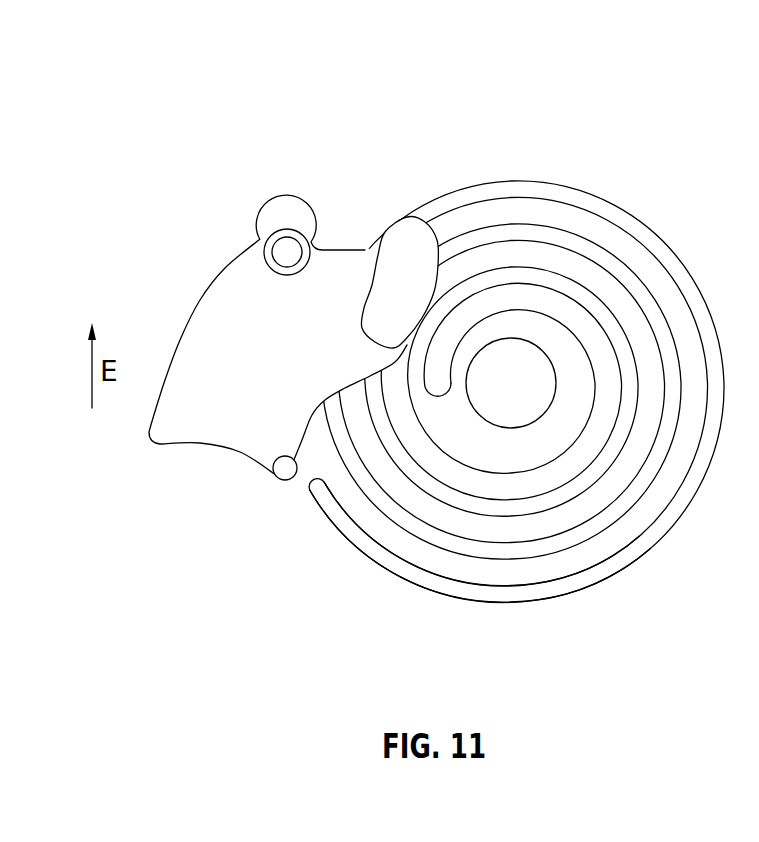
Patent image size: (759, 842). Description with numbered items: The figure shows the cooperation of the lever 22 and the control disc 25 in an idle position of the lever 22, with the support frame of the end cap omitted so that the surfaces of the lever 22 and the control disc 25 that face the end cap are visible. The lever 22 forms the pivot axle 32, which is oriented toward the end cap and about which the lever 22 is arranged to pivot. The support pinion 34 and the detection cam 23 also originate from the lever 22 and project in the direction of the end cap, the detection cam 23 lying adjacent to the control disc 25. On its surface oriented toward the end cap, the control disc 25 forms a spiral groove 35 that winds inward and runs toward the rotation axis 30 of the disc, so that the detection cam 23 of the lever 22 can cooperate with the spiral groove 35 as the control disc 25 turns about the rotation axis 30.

The lever 22 is at (222, 236).
The detection cam 23 is at (397, 232).
The control disc 25 is at (689, 217).
The rotation axis 30 is at (515, 372).
The pivot axle 32 is at (289, 250).
The support pinion 34 is at (286, 478).
The spiral groove 35 is at (542, 572).